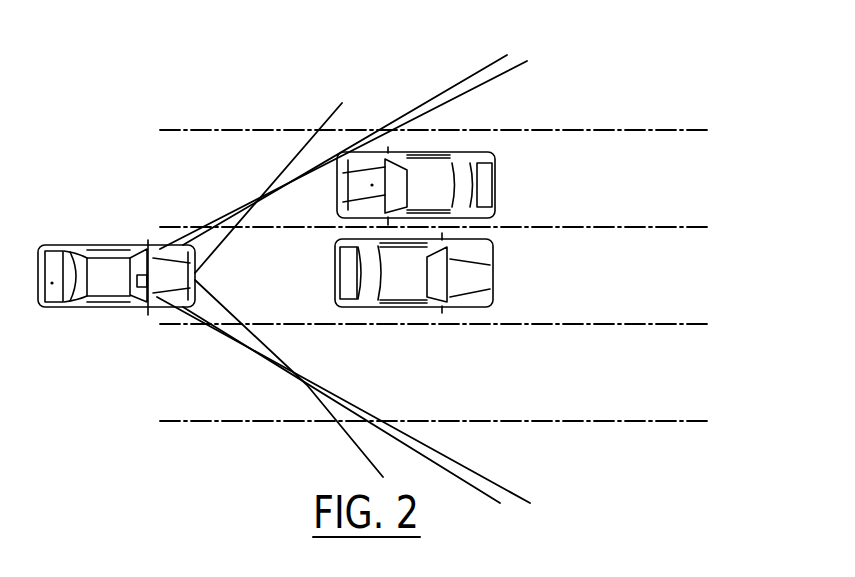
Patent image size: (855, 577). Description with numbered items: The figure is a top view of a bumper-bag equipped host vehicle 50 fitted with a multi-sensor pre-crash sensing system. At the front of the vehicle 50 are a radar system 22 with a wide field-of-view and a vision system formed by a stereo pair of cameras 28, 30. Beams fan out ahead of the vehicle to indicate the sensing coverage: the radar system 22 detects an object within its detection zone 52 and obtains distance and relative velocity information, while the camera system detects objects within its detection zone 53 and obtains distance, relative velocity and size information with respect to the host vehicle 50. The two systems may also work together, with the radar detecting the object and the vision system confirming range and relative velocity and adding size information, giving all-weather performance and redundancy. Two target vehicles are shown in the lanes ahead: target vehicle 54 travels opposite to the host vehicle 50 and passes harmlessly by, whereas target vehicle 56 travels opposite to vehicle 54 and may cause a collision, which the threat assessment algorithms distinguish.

The radar system 22 is at (172, 258).
The camera 28 is at (148, 247).
The camera 30 is at (120, 303).
The bumper-bag equipped vehicle 50 is at (123, 243).
The detection zone 52 is at (632, 283).
The detection zone 53 is at (693, 283).
The target vehicle 54 is at (496, 186).
The target vehicle 56 is at (495, 285).